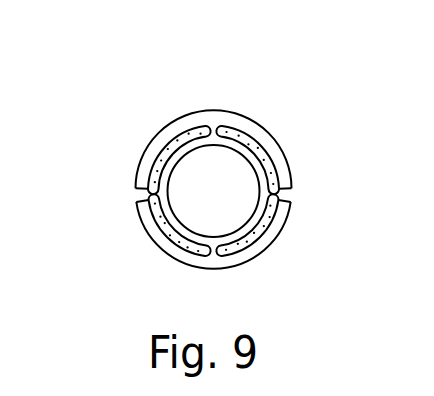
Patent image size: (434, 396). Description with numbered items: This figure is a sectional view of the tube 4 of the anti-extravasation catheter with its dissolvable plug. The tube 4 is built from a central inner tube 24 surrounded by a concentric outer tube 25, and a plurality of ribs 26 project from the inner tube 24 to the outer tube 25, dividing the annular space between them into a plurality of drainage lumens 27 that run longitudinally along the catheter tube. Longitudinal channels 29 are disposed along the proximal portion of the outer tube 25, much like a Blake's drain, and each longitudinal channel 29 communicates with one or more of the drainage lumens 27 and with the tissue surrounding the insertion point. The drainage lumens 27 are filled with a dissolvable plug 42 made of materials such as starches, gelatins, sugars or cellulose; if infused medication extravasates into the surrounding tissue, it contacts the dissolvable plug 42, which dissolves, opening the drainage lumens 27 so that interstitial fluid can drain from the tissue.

The tube 4 is at (217, 92).
The outer tube 25 is at (272, 132).
The drainage lumens 27 is at (163, 172).
The inner tube 24 is at (175, 222).
The dissolvable plug 42 is at (285, 196).
The longitudinal channels 29 is at (113, 197).
The ribs 26 is at (212, 256).